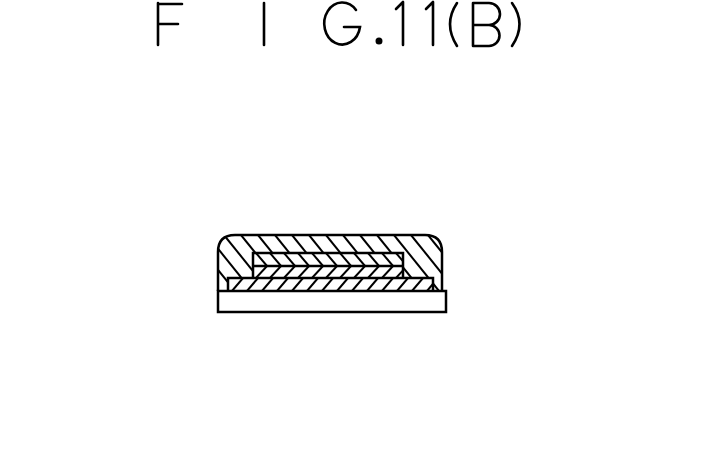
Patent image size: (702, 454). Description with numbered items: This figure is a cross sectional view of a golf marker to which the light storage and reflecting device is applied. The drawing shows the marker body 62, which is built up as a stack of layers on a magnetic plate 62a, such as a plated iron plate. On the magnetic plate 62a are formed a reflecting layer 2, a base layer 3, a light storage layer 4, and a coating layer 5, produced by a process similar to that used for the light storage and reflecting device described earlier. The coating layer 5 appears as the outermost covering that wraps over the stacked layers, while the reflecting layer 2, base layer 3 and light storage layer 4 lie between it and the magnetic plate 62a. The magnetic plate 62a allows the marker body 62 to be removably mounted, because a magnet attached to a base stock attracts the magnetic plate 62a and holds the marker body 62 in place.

The reflecting layer 2 is at (241, 272).
The base layer 3 is at (373, 267).
The light storage layer 4 is at (307, 258).
The coating layer 5 is at (417, 240).
The marker body 62 is at (202, 232).
The magnetic plate 62a is at (367, 300).